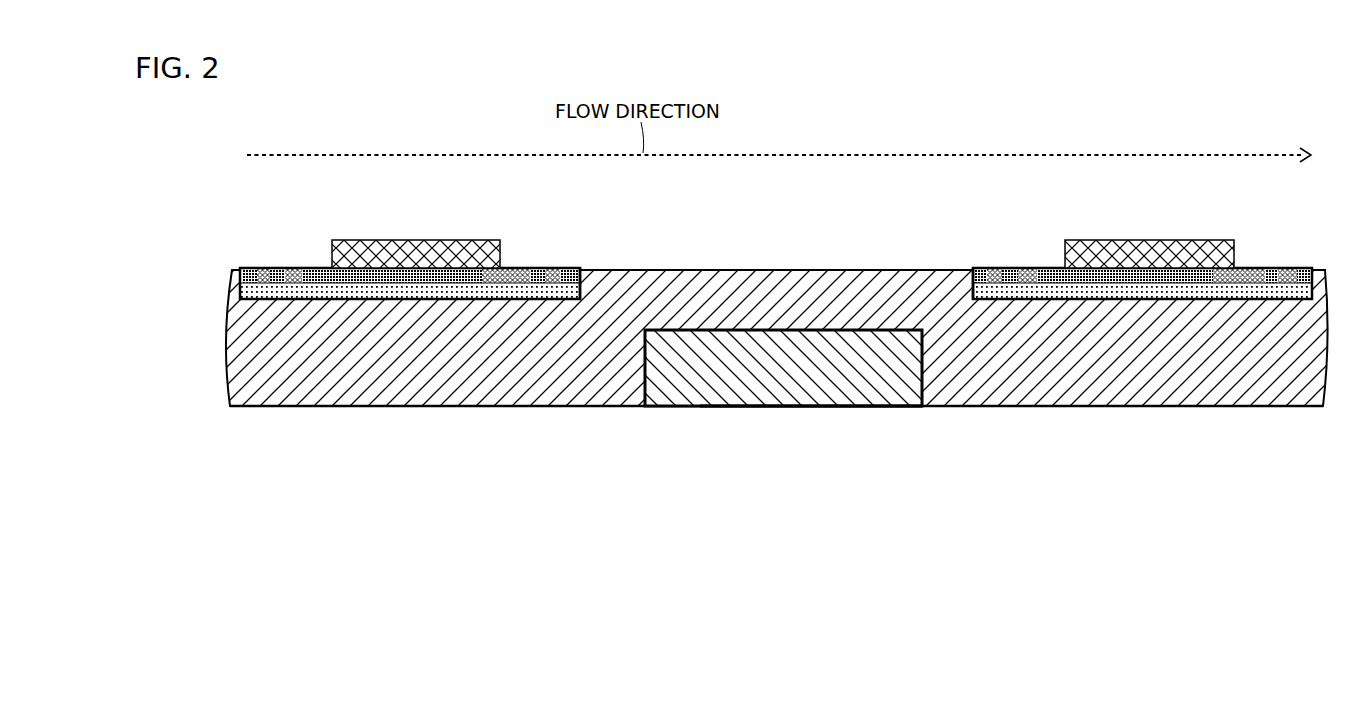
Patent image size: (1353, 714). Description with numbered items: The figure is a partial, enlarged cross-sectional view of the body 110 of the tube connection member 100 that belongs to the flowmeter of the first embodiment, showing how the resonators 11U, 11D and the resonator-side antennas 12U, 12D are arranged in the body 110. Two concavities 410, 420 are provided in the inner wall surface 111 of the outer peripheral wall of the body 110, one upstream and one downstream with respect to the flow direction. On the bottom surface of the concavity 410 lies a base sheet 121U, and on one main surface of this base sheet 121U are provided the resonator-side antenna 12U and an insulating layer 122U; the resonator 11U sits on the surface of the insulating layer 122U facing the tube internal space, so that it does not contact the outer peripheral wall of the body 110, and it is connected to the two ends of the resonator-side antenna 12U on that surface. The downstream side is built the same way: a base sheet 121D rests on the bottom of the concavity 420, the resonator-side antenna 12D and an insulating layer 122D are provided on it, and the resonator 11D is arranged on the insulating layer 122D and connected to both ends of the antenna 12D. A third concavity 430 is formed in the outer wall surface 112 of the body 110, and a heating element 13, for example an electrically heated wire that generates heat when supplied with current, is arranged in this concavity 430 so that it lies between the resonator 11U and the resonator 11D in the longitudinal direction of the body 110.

The tube connection member 100 is at (1156, 473).
The body 110 is at (347, 393).
The inner wall surface 111 is at (767, 270).
The outer wall surface 112 is at (1069, 407).
The heating element 13 is at (762, 395).
The concavity 410 is at (590, 272).
The concavity 420 is at (970, 273).
The concavity 430 is at (921, 408).
The resonator 11U is at (457, 242).
The resonator 11D is at (1092, 242).
The resonator-side antenna 12U is at (292, 270).
The resonator-side antenna 12D is at (1023, 270).
The base sheet 121U is at (352, 281).
The insulating layer 122U is at (394, 272).
The base sheet 121D is at (1203, 280).
The insulating layer 122D is at (1155, 272).